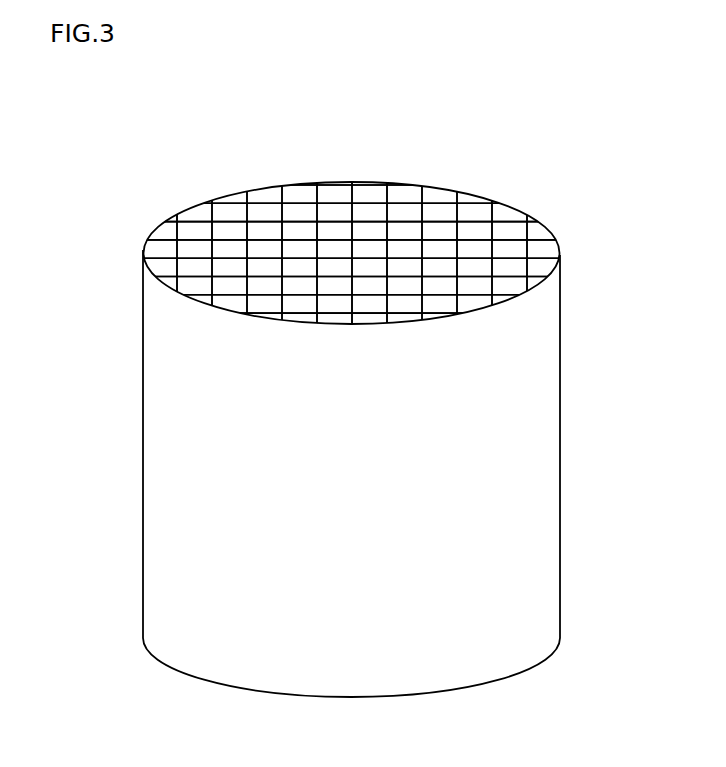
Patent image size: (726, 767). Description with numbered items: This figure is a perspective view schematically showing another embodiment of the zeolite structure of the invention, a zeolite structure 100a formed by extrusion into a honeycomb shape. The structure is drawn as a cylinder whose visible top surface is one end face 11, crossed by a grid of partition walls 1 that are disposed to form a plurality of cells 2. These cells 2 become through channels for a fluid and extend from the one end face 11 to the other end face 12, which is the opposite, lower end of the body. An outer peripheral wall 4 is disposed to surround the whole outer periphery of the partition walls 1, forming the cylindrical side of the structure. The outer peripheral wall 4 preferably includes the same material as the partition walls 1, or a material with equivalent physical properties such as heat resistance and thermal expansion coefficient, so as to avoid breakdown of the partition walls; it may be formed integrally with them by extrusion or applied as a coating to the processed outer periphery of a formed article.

The zeolite structure 100a is at (663, 61).
The partition walls 1 is at (268, 189).
The cells 2 is at (372, 213).
The outer peripheral wall 4 is at (477, 401).
The one end face 11 is at (147, 237).
The other end face 12 is at (508, 678).